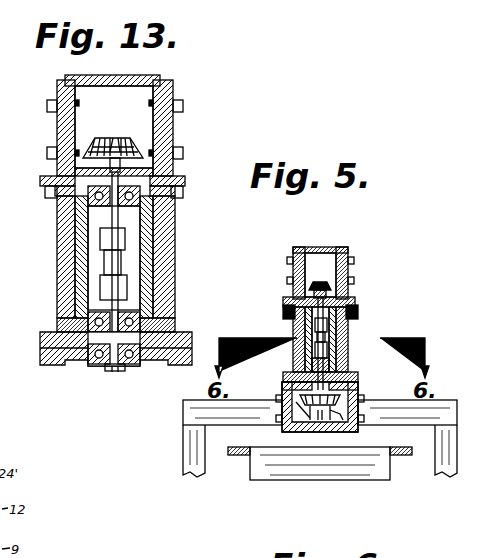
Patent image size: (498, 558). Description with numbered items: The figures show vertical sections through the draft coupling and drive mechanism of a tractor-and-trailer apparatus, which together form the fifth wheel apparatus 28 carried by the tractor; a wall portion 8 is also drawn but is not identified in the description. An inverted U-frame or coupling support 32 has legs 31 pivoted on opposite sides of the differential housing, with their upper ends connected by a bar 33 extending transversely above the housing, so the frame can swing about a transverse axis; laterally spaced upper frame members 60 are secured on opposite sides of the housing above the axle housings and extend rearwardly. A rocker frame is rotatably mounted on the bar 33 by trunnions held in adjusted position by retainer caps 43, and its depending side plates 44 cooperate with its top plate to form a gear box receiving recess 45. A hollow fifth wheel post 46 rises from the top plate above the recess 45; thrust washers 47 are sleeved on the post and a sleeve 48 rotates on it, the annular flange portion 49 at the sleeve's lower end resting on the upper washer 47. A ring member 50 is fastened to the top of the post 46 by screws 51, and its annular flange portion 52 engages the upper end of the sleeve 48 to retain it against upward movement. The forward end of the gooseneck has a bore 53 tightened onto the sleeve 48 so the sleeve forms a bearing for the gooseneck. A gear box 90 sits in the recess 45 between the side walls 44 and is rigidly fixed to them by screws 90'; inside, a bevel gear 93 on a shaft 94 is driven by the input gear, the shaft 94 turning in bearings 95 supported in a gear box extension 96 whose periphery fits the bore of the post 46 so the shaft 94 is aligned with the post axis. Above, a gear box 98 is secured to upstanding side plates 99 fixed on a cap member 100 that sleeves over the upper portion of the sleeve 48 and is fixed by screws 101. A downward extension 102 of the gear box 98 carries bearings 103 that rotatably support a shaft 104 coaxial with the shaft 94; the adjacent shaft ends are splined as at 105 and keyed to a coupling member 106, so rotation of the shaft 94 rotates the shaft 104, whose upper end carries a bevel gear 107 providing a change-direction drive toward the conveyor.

In FIG. 13, the housing wall 8 is at (176, 232).
In FIG. 5, the housing wall 8 is at (348, 323).
In FIG. 13, the fifth wheel apparatus 28 is at (186, 336).
In FIG. 5, the fifth wheel apparatus 28 is at (356, 373).
In FIG. 5, the legs 31 is at (193, 460).
In FIG. 5, the inverted U-frame 32 is at (222, 401).
In FIG. 5, the bar 33 is at (440, 410).
In FIG. 5, the retainer caps 43 is at (305, 428).
In FIG. 13, the side plates 44 is at (56, 333).
In FIG. 5, the side plates 44 is at (285, 376).
In FIG. 5, the gear box receiving recess 45 is at (296, 432).
In FIG. 13, the hollow fifth wheel post 46 is at (80, 228).
In FIG. 5, the hollow fifth wheel post 46 is at (293, 311).
In FIG. 13, the thrust washers 47 is at (175, 319).
In FIG. 5, the thrust washers 47 is at (352, 362).
In FIG. 13, the sleeve 48 is at (155, 250).
In FIG. 5, the sleeve 48 is at (350, 332).
In FIG. 13, the annular flange portion 49 is at (58, 313).
In FIG. 5, the annular flange portion 49 is at (293, 366).
In FIG. 13, the ring member 50 is at (175, 178).
In FIG. 5, the ring member 50 is at (355, 298).
In FIG. 13, the screws 51 is at (58, 176).
In FIG. 5, the screws 51 is at (300, 286).
In FIG. 13, the annular flange portion 52 is at (62, 181).
In FIG. 5, the annular flange portion 52 is at (296, 298).
In FIG. 13, the bore 53 is at (70, 246).
In FIG. 5, the bore 53 is at (305, 325).
In FIG. 5, the upper frame members 60 is at (236, 452).
In FIG. 5, the gear box 90 is at (320, 452).
In FIG. 5, the screws 90' is at (391, 432).
In FIG. 13, the bevel gear 93 is at (130, 366).
In FIG. 5, the bevel gear 93 is at (356, 387).
In FIG. 13, the shaft 94 is at (115, 365).
In FIG. 5, the shaft 94 is at (335, 426).
In FIG. 13, the bearings 95 is at (96, 363).
In FIG. 5, the bearings 95 is at (290, 383).
In FIG. 13, the gear box extension 96 is at (150, 302).
In FIG. 5, the gear box extension 96 is at (348, 352).
In FIG. 13, the gear box 98 is at (160, 77).
In FIG. 5, the gear box 98 is at (340, 246).
In FIG. 13, the side plates 99 is at (173, 125).
In FIG. 5, the side plates 99 is at (350, 285).
In FIG. 13, the cap member 100 is at (185, 183).
In FIG. 5, the cap member 100 is at (356, 300).
In FIG. 13, the screws 101 is at (182, 194).
In FIG. 5, the screws 101 is at (356, 304).
In FIG. 13, the downward extension 102 is at (170, 216).
In FIG. 5, the downward extension 102 is at (348, 313).
In FIG. 13, the bearings 103 is at (85, 210).
In FIG. 5, the bearings 103 is at (288, 306).
In FIG. 13, the shaft 104 is at (109, 152).
In FIG. 5, the shaft 104 is at (318, 280).
In FIG. 13, the splines 105 is at (122, 290).
In FIG. 5, the splines 105 is at (330, 342).
In FIG. 13, the coupling member 106 is at (105, 243).
In FIG. 5, the coupling member 106 is at (312, 337).
In FIG. 13, the bevel gear 107 is at (125, 152).
In FIG. 5, the bevel gear 107 is at (345, 270).